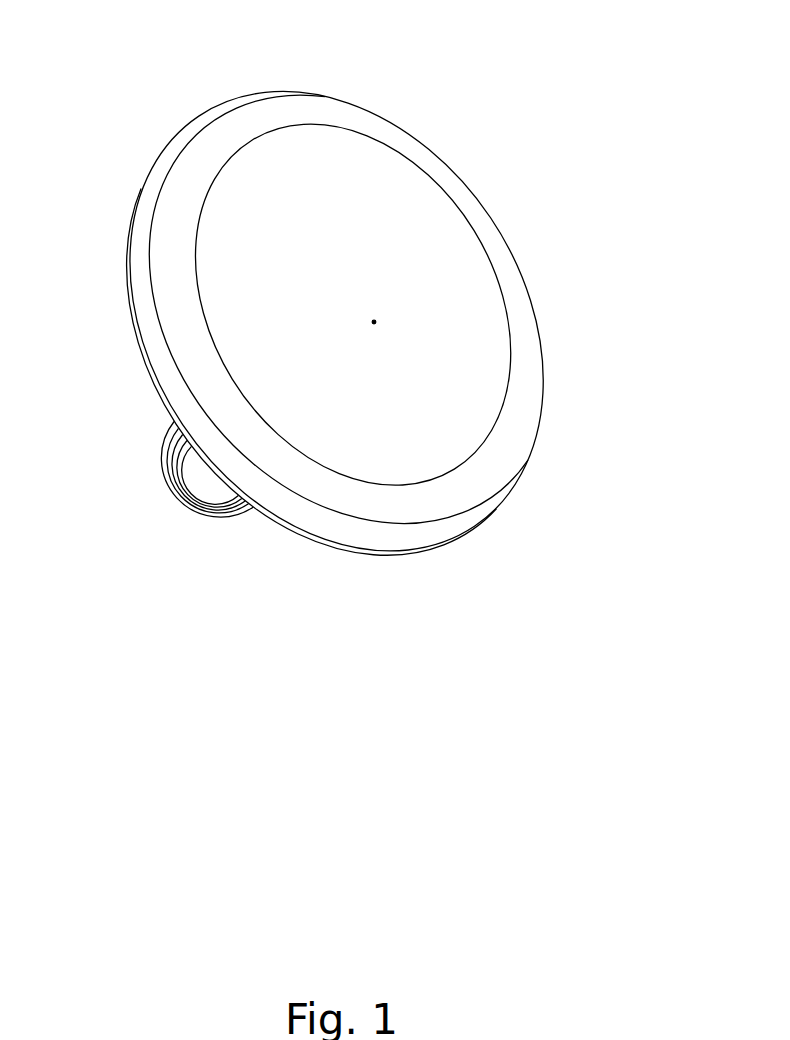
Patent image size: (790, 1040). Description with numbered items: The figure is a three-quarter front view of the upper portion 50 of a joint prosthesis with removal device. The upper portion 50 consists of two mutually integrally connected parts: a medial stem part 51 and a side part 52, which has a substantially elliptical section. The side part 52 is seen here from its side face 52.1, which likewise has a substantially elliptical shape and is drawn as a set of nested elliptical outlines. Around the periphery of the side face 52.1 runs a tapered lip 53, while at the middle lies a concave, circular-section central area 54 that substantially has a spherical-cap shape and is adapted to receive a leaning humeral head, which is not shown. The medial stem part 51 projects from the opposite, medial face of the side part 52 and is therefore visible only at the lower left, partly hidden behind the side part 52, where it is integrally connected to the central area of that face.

The upper portion 50 is at (337, 332).
The medial stem part 51 is at (161, 457).
The side part 52 is at (337, 321).
The side face 52.1 is at (451, 165).
The tapered lip 53 is at (496, 521).
The central area 54 is at (392, 313).